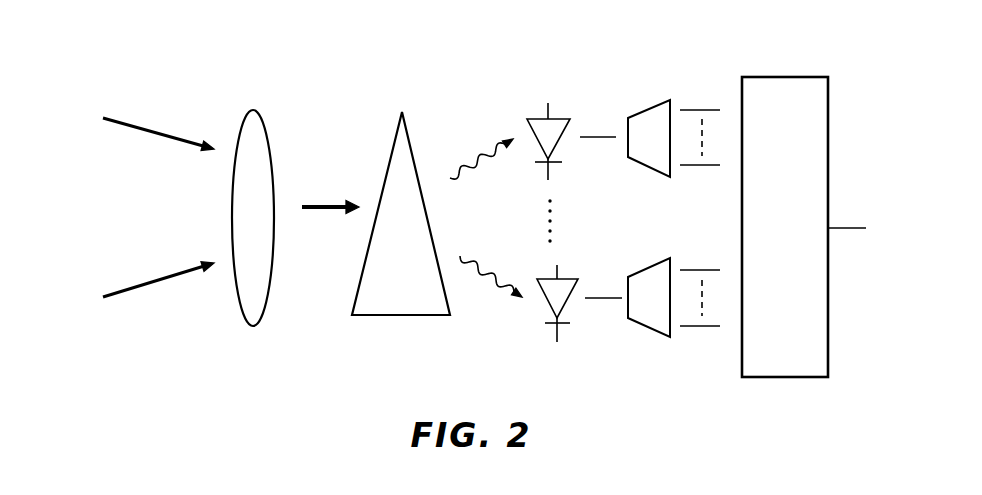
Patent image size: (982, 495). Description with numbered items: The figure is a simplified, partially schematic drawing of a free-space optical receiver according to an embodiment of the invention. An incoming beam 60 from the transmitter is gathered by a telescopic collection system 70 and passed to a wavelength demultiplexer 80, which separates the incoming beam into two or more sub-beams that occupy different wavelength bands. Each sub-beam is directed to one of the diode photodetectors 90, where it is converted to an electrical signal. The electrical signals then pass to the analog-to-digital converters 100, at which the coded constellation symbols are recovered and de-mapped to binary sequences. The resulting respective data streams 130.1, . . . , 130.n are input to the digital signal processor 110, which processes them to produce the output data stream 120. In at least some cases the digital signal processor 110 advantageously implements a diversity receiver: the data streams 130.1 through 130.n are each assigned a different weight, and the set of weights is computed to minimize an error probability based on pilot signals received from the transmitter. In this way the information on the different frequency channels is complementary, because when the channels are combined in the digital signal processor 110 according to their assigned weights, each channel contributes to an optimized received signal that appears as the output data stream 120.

The incoming beam 60 is at (161, 128).
The telescopic collection system 70 is at (254, 110).
The wavelength demultiplexer 80 is at (400, 112).
The diode photodetectors 90 is at (547, 113).
The analog-to-digital converters 100 is at (654, 103).
The digital signal processor 110 is at (788, 77).
The output data stream 120 is at (854, 228).
The data stream 130.1 is at (698, 166).
The data stream 130.n is at (698, 327).